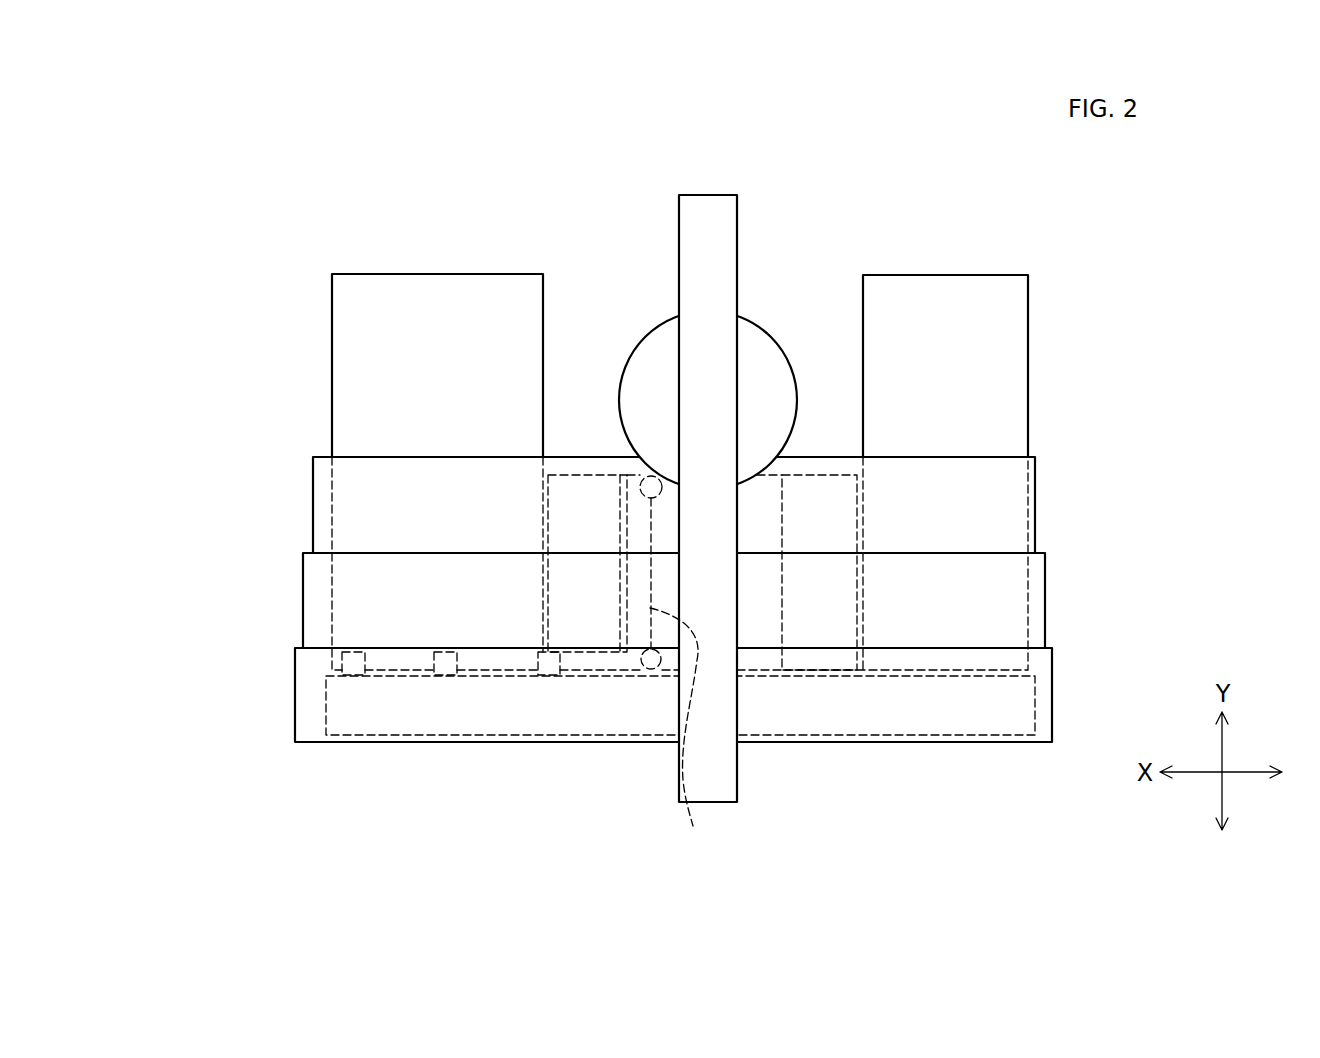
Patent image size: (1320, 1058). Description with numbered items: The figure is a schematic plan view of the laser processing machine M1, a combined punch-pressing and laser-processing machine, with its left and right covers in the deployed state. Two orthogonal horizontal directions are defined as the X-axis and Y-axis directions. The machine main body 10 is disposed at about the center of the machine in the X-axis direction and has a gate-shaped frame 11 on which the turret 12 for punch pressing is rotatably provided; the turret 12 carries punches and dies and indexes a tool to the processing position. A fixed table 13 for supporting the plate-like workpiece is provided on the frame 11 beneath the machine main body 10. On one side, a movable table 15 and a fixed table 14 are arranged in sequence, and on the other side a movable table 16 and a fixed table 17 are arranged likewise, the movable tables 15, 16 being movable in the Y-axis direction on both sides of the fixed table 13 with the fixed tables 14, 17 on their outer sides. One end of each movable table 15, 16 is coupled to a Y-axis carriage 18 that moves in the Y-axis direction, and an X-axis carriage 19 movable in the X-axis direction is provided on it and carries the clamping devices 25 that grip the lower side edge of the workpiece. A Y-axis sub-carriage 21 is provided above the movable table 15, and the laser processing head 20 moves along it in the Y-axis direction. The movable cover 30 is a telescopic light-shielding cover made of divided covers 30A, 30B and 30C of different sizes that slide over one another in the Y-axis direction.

The machine main body 10 is at (758, 206).
The gate-shaped frame 11 is at (706, 205).
The turret 12 is at (636, 342).
The fixed table 13 is at (763, 667).
The fixed table 14 is at (418, 293).
The movable table 15 is at (565, 490).
The movable table 16 is at (823, 490).
The fixed table 17 is at (947, 295).
The Y-axis carriage 18 is at (840, 718).
The X-axis carriage 19 is at (498, 678).
The laser processing head 20 is at (640, 487).
The Y-axis sub-carriage 21 is at (681, 730).
The clamping device 25 is at (352, 678).
The movable cover 30 is at (671, 652).
The divided cover 30A is at (294, 698).
The divided cover 30B is at (302, 608).
The divided cover 30C is at (312, 510).
The laser processing machine M1 is at (889, 164).